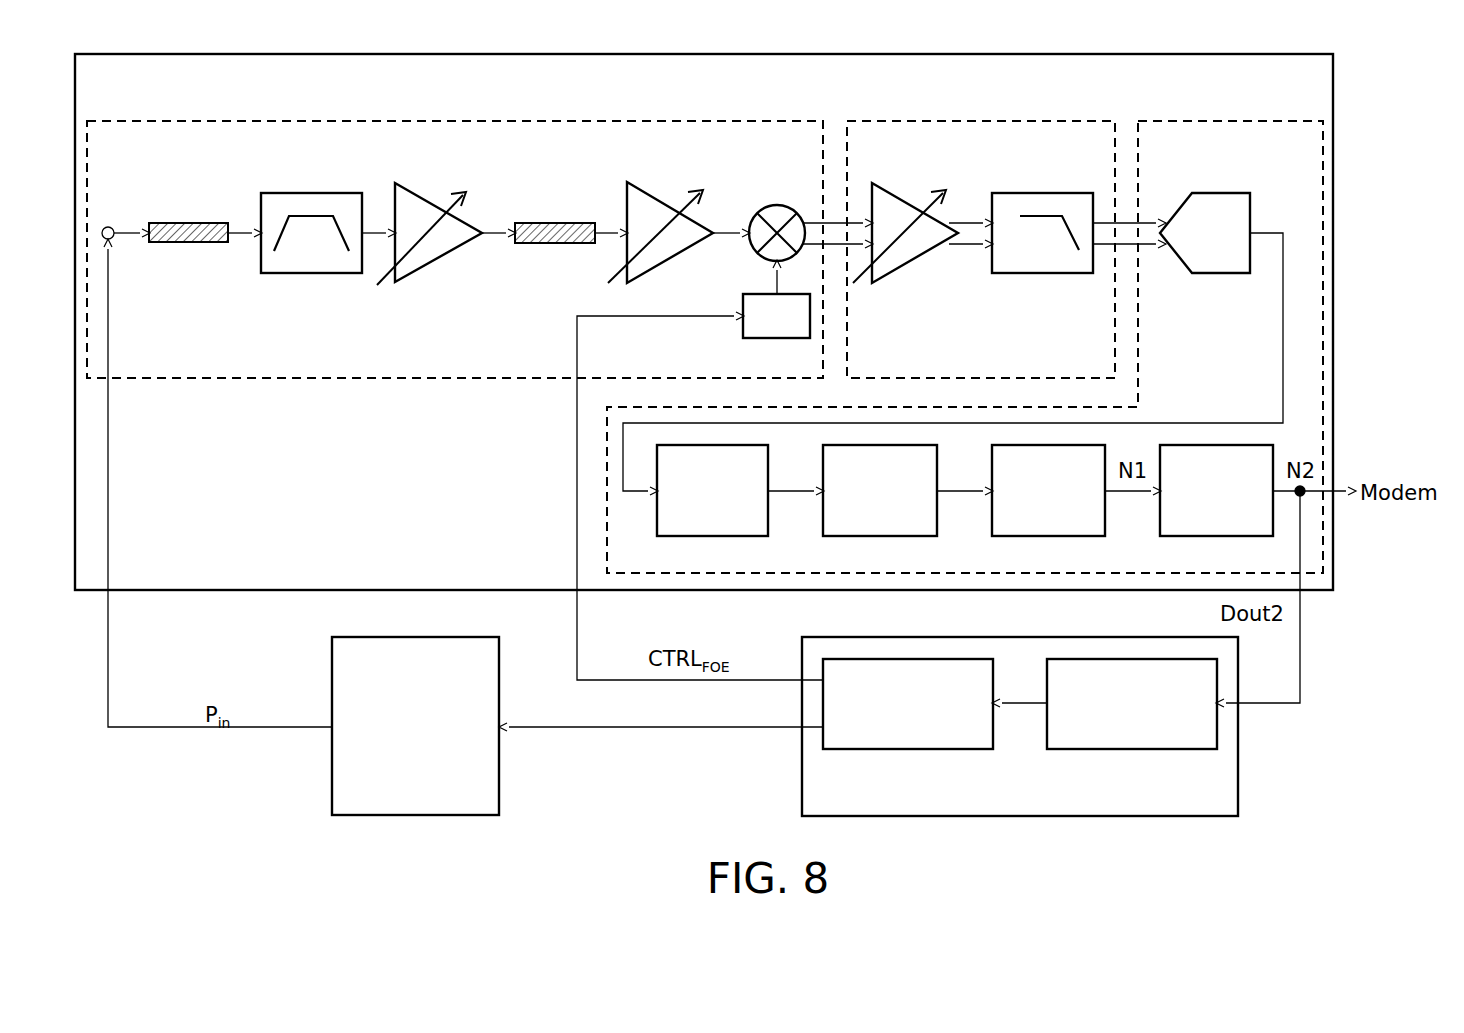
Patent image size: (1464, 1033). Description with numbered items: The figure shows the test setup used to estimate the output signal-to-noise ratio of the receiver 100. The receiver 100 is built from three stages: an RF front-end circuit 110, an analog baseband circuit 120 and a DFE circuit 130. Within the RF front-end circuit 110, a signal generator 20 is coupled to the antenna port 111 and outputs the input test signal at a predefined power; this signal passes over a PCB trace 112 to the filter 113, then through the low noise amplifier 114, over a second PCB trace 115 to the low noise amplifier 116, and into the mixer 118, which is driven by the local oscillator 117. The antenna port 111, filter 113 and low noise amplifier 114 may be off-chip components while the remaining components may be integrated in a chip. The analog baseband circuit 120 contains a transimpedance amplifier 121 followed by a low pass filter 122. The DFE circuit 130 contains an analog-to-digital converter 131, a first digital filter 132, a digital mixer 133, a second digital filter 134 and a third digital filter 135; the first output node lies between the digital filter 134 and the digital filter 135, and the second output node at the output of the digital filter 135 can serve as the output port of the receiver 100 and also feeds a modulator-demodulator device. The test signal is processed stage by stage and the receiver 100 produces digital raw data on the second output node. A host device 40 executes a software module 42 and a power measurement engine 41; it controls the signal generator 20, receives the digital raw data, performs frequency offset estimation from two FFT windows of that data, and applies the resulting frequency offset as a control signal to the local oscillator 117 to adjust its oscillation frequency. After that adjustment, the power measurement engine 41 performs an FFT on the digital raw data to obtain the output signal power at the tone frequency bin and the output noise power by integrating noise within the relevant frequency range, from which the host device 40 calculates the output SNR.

The receiver 100 is at (1268, 52).
The RF front-end circuit 110 is at (455, 120).
The antenna port 111 is at (111, 226).
The PCB trace 112 is at (190, 243).
The filter 113 is at (310, 274).
The low noise amplifier 114 is at (443, 268).
The PCB trace 115 is at (553, 244).
The low noise amplifier 116 is at (665, 194).
The local oscillator 117 is at (770, 339).
The mixer 118 is at (775, 205).
The analog baseband circuit 120 is at (1045, 120).
The transimpedance amplifier 121 is at (920, 266).
The low pass filter 122 is at (1040, 274).
The DFE circuit 130 is at (1258, 120).
The analog-to-digital converter 131 is at (1222, 274).
The digital filter 132 is at (712, 537).
The digital mixer 133 is at (880, 537).
The digital filter 134 is at (1048, 537).
The digital filter 135 is at (1215, 537).
The signal generator 20 is at (443, 816).
The host device 40 is at (1180, 817).
The power measurement engine 41 is at (1175, 750).
The software module 42 is at (875, 750).